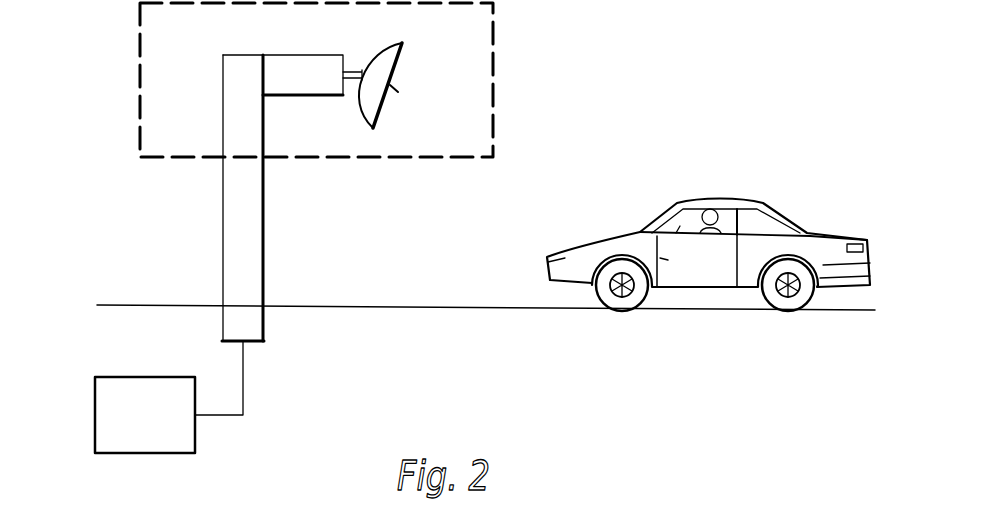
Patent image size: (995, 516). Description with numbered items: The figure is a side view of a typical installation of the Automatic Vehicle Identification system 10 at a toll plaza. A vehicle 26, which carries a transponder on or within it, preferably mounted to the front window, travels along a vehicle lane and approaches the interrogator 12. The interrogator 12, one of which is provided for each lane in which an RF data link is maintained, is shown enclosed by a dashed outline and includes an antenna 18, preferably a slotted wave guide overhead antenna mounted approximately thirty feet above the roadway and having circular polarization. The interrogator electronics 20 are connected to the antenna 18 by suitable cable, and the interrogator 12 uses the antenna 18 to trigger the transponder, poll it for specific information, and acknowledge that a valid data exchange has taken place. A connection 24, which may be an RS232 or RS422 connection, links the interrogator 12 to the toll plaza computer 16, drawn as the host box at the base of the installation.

The AVI system 10 is at (88, 150).
The interrogator 12 is at (200, 55).
The toll plaza computer 16 is at (162, 444).
The antenna 18 is at (396, 70).
The interrogator electronics 20 is at (305, 55).
The connection 24 is at (243, 370).
The vehicle 26 is at (825, 247).